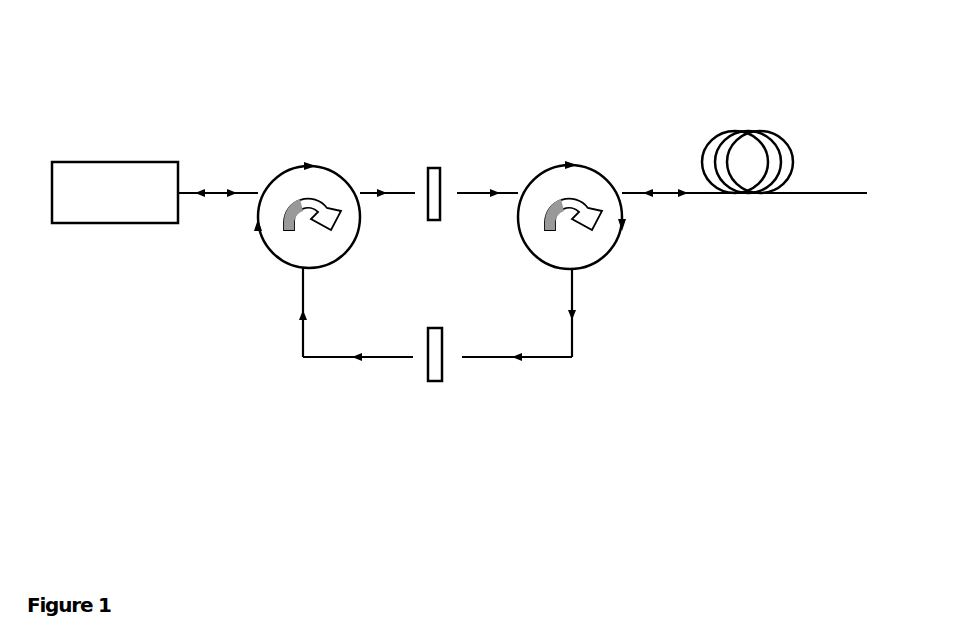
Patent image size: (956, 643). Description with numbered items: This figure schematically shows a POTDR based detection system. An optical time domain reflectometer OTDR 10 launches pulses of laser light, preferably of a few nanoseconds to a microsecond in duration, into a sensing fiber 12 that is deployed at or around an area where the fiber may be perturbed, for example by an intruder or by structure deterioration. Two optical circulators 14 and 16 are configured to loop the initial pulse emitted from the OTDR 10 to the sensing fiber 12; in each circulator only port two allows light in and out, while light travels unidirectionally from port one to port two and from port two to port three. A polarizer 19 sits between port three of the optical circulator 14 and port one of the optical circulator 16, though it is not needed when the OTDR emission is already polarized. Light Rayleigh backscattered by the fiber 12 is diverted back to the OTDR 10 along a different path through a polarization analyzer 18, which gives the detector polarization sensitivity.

The optical time domain reflectometer 10 is at (109, 243).
The sensing fiber 12 is at (752, 113).
The optical circulator 14 is at (308, 143).
The optical circulator 16 is at (572, 147).
The polarization analyzer 18 is at (453, 386).
The polarizer 19 is at (436, 157).